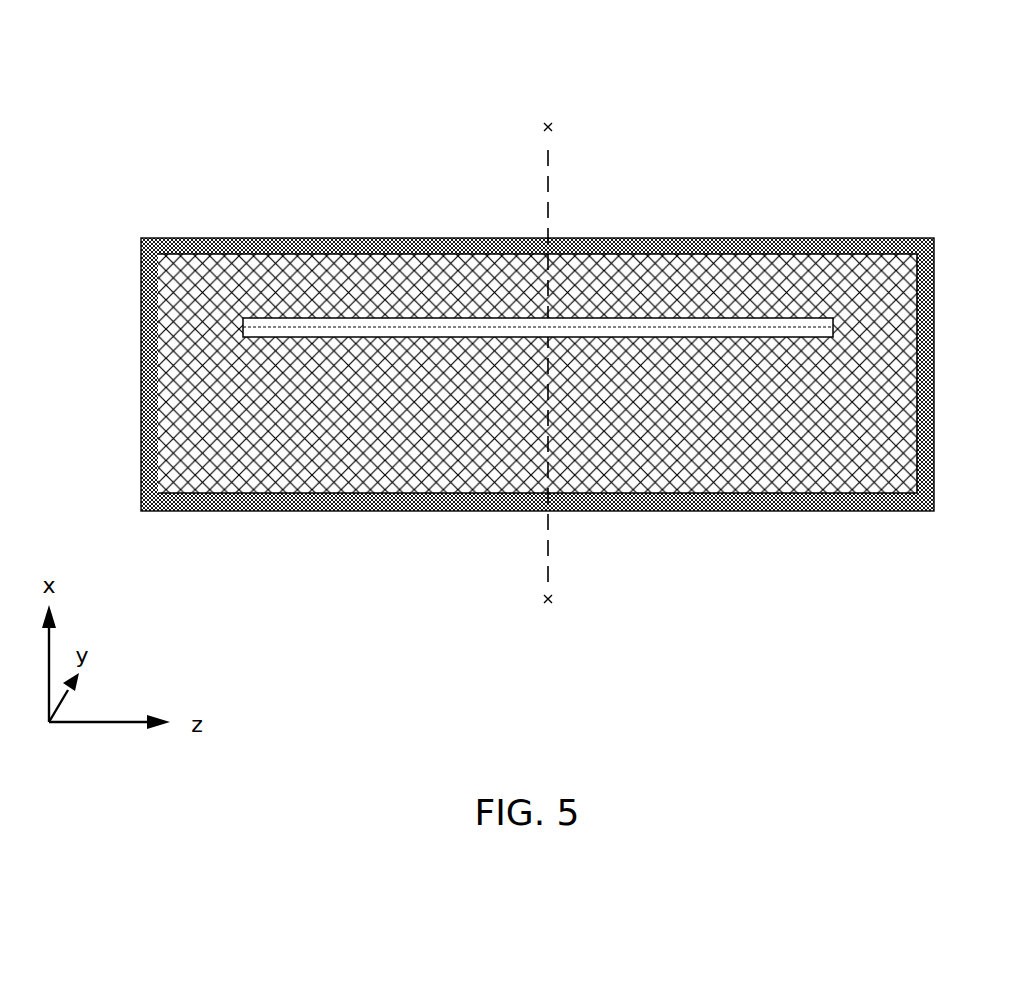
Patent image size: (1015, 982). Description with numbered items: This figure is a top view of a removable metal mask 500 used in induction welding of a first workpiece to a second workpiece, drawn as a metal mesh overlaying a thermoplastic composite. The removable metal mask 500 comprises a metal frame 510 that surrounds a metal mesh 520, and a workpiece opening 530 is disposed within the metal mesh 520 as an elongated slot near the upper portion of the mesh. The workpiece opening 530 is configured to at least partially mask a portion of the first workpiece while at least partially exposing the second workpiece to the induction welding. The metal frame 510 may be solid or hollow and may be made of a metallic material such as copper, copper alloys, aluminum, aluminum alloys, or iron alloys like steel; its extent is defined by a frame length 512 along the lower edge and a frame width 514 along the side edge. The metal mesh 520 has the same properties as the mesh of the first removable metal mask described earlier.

The removable metal mask 500 is at (702, 103).
The metal frame 510 is at (645, 242).
The frame length 512 is at (617, 512).
The frame width 514 is at (933, 418).
The metal mesh 520 is at (890, 282).
The workpiece opening 530 is at (312, 317).